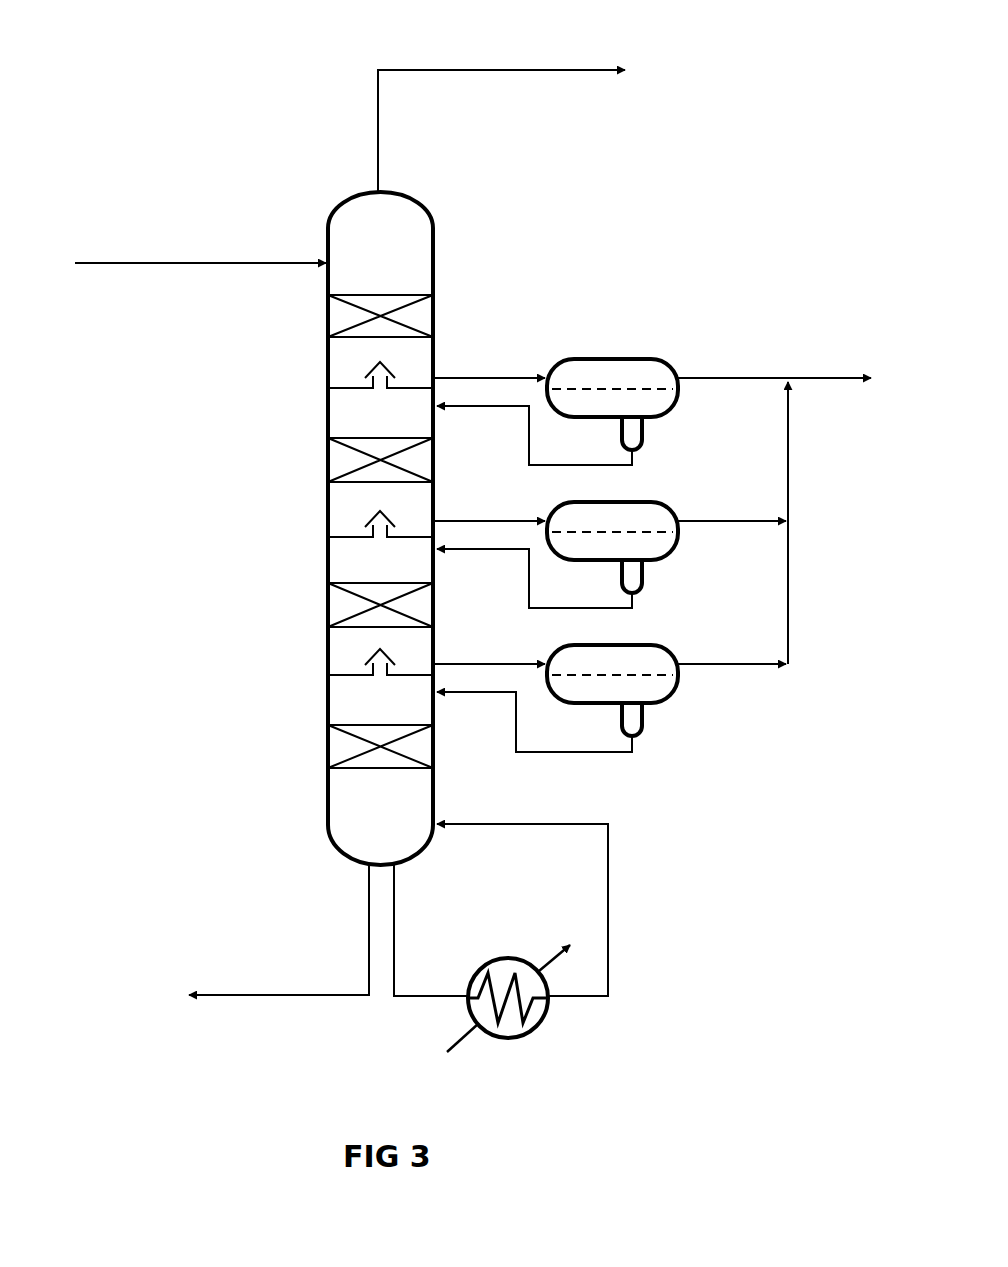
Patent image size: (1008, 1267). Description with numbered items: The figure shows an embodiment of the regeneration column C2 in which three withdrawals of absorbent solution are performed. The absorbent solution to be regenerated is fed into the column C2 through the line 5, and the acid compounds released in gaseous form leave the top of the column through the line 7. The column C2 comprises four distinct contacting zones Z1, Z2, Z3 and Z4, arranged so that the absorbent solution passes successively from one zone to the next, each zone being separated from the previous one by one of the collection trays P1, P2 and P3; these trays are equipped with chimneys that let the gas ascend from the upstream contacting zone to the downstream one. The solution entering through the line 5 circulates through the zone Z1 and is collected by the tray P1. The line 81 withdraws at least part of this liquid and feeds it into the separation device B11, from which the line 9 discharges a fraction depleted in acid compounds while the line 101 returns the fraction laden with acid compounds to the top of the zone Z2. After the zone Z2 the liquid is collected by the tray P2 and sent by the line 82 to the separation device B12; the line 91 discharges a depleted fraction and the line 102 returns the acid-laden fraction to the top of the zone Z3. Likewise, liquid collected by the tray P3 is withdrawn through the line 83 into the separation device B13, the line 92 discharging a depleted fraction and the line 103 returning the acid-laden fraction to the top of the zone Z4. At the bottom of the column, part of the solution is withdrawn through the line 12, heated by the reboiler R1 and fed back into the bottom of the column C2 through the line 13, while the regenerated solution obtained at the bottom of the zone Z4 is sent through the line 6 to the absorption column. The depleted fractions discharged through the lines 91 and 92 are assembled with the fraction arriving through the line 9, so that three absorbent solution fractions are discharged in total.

The line 5 is at (184, 262).
The line 6 is at (248, 994).
The line 7 is at (478, 70).
The line 9 is at (720, 375).
The line 12 is at (395, 910).
The line 13 is at (515, 824).
The line 81 is at (475, 377).
The line 82 is at (500, 520).
The line 83 is at (501, 663).
The line 91 is at (743, 519).
The line 92 is at (746, 662).
The line 101 is at (460, 411).
The line 102 is at (459, 555).
The line 103 is at (473, 700).
The separation device B11 is at (611, 358).
The separation device B12 is at (671, 502).
The separation device B13 is at (674, 645).
The column C2 is at (437, 235).
The collection tray P1 is at (340, 387).
The collection tray P2 is at (340, 536).
The collection tray P3 is at (340, 674).
The reboiler R1 is at (528, 1040).
The contacting zone Z1 is at (340, 316).
The contacting zone Z2 is at (340, 460).
The contacting zone Z3 is at (340, 604).
The contacting zone Z4 is at (340, 747).